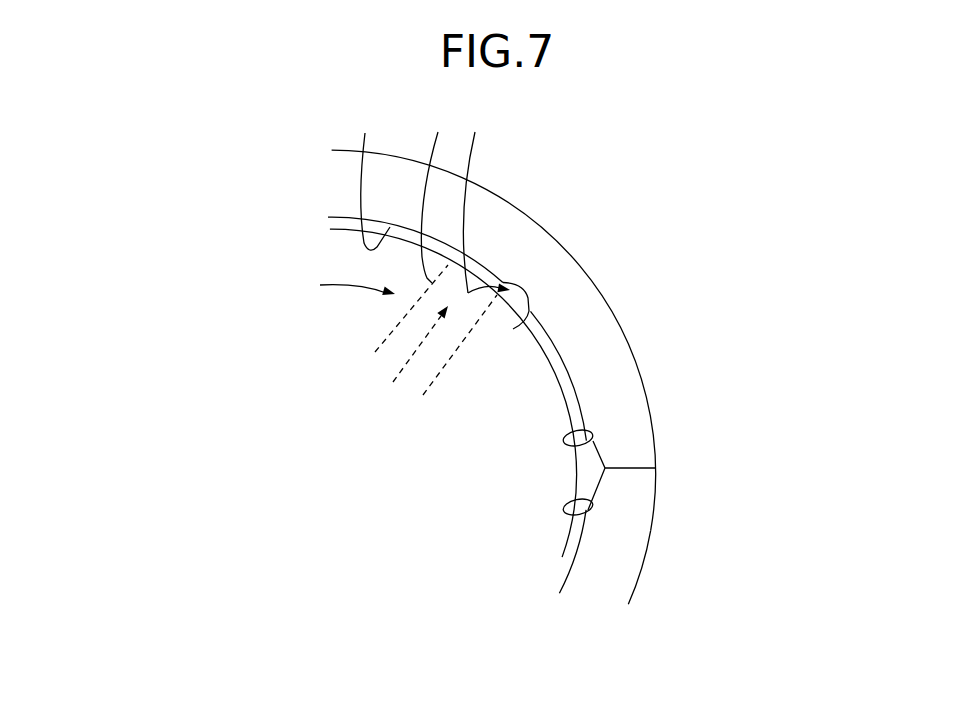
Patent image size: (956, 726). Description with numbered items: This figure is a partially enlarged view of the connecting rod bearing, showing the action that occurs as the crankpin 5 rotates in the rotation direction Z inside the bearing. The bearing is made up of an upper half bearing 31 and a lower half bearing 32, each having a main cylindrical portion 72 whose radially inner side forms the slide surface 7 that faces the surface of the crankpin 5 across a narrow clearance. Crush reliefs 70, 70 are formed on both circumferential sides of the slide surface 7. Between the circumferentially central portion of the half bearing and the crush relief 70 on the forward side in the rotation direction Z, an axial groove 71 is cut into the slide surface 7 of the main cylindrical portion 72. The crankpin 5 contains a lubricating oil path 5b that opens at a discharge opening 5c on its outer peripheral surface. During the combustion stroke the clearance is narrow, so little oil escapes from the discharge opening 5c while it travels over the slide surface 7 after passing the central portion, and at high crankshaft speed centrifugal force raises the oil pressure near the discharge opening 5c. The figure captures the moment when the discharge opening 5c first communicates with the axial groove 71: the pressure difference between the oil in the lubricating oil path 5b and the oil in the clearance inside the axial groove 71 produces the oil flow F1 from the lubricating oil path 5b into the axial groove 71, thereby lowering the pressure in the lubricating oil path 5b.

The crankpin 5 is at (407, 488).
The lubricating oil path 5b is at (437, 197).
The discharge opening 5c is at (473, 265).
The slide surface 7 is at (375, 181).
The upper half bearing 31 is at (493, 190).
The half bearing 32 is at (637, 577).
The crush relief 70 is at (565, 440).
The axial groove 71 is at (513, 329).
The main cylindrical portion 72 is at (535, 251).
The oil flow F1 is at (486, 201).
The rotation direction Z is at (347, 286).